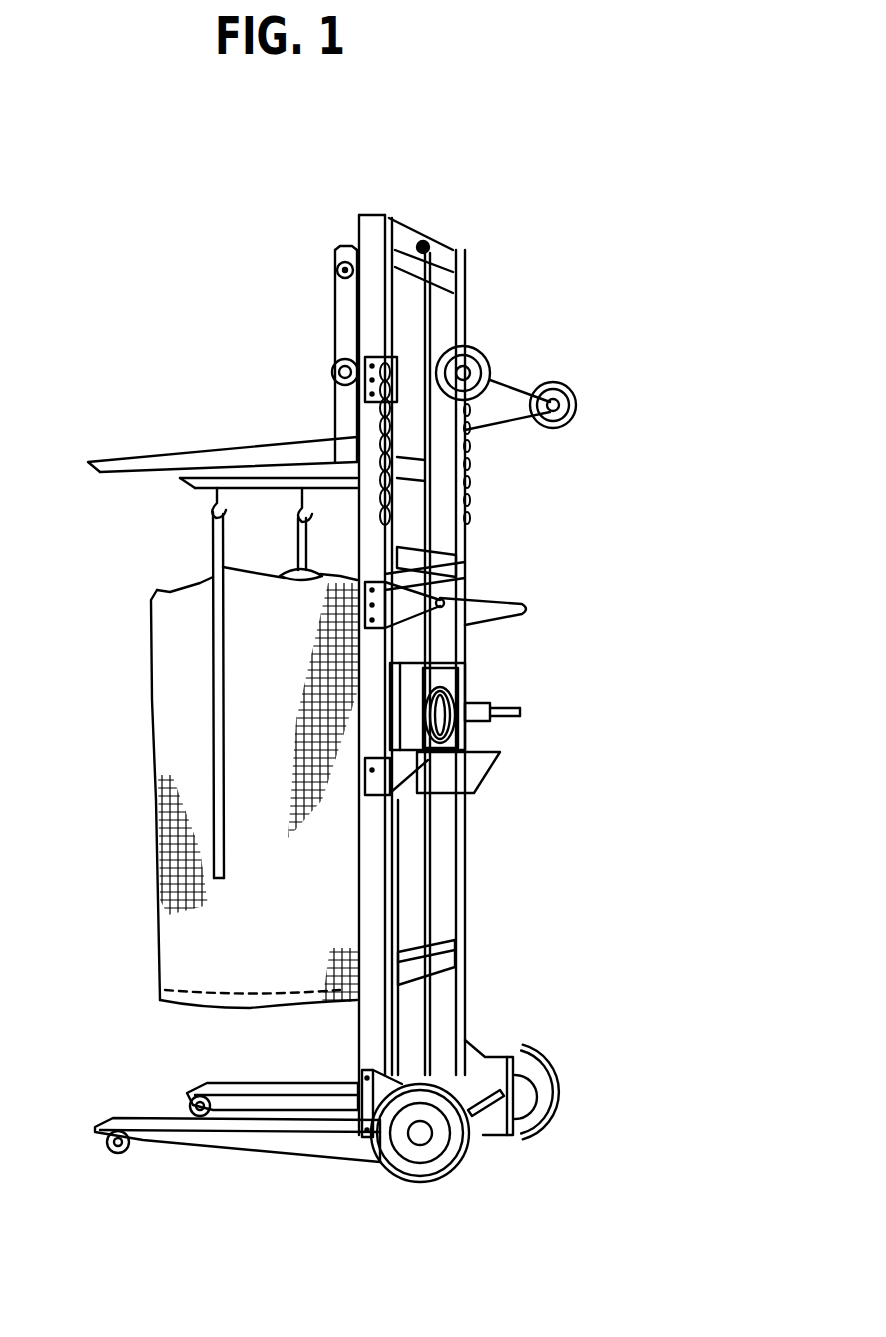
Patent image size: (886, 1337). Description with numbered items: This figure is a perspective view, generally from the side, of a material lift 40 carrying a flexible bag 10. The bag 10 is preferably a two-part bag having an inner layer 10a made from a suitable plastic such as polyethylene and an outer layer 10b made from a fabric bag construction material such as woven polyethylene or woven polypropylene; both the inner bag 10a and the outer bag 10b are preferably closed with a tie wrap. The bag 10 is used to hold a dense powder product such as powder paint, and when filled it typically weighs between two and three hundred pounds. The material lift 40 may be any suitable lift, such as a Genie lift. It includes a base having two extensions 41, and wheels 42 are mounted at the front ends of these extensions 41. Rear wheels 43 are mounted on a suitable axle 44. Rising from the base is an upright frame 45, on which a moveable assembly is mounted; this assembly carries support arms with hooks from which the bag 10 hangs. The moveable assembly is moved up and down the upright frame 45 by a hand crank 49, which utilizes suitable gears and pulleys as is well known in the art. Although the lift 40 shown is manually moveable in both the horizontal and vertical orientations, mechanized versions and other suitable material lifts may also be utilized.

The flexible bag 10 is at (220, 760).
The inner layer 10a is at (290, 574).
The outer layer 10b is at (178, 624).
The material lift 40 is at (530, 1000).
The extensions 41 is at (288, 1083).
The wheels 42 is at (185, 1108).
The rear wheels 43 is at (418, 1180).
The axle 44 is at (480, 1108).
The upright frame 45 is at (463, 896).
The hand crank 49 is at (512, 708).